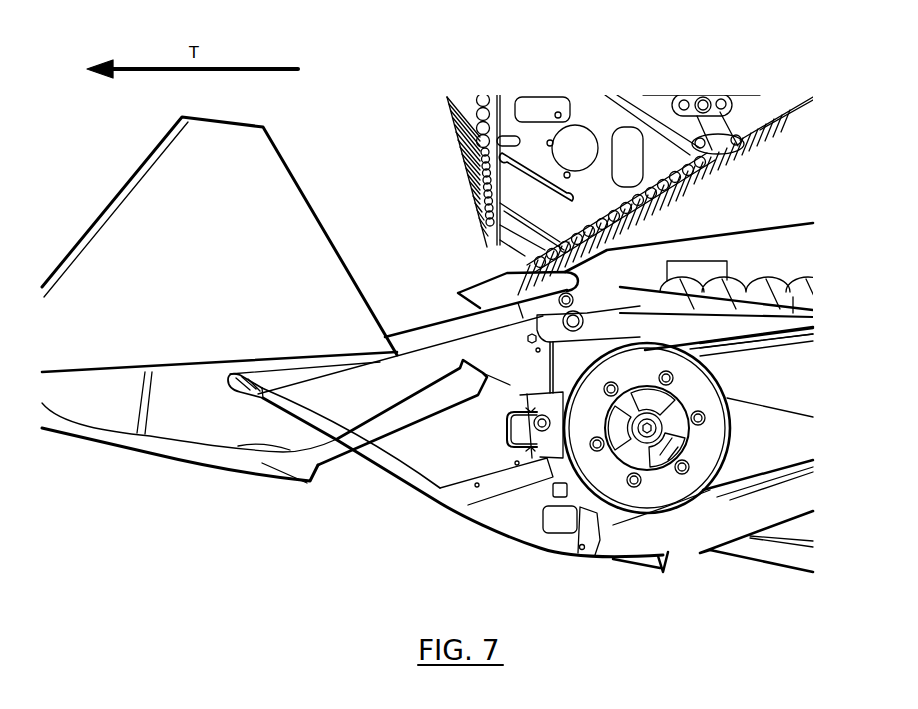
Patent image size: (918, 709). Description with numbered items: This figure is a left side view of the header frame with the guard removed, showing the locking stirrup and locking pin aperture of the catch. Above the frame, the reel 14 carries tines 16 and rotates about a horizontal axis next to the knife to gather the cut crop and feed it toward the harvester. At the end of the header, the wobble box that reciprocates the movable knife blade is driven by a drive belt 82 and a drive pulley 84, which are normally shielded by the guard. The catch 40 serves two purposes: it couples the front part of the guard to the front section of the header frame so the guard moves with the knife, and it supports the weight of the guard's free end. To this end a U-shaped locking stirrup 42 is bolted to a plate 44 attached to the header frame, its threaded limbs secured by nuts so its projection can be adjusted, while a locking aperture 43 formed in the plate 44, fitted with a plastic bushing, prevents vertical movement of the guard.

The reel 14 is at (420, 108).
The tines 16 is at (770, 158).
The catch 40 is at (494, 458).
The locking stirrup 42 is at (505, 432).
The locking aperture 43 is at (582, 550).
The plate 44 is at (548, 393).
The drive belt 82 is at (813, 338).
The drive pulley 84 is at (705, 455).